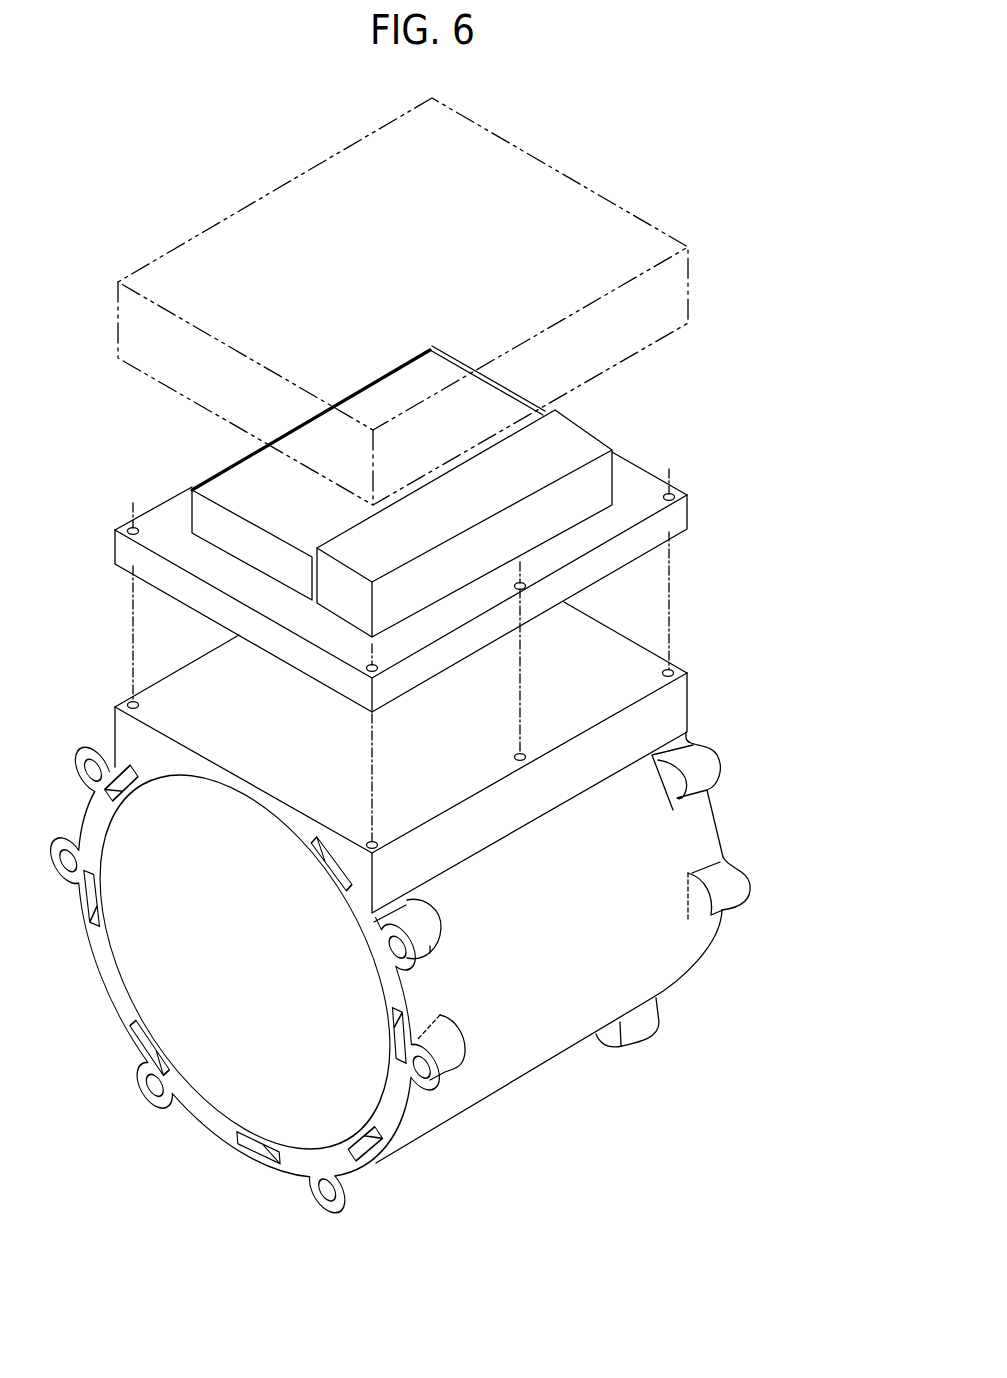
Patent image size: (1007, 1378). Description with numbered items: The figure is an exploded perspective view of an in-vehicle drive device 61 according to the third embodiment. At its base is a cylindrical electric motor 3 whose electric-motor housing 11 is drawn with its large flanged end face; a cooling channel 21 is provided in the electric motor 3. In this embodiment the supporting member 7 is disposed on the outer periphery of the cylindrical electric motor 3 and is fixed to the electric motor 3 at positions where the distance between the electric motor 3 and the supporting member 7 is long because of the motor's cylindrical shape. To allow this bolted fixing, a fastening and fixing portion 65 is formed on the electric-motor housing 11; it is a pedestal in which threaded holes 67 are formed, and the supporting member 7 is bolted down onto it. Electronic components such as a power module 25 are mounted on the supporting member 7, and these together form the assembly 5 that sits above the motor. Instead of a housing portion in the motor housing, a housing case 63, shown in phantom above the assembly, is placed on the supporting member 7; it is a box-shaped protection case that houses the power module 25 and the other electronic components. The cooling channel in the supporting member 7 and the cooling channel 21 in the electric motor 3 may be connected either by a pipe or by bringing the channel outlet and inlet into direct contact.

The electric motor 3 is at (605, 1104).
The inverter unit 5 is at (638, 418).
The supporting member 7 is at (642, 486).
The electric-motor housing 11 is at (706, 827).
The cooling channel 21 is at (374, 1154).
The power module 25 is at (250, 467).
The in-vehicle drive device 61 is at (540, 78).
The housing case 63 is at (598, 207).
The fastening and fixing portion 65 is at (677, 707).
The threaded holes 67 is at (674, 667).